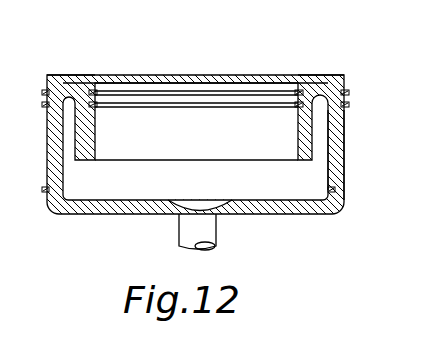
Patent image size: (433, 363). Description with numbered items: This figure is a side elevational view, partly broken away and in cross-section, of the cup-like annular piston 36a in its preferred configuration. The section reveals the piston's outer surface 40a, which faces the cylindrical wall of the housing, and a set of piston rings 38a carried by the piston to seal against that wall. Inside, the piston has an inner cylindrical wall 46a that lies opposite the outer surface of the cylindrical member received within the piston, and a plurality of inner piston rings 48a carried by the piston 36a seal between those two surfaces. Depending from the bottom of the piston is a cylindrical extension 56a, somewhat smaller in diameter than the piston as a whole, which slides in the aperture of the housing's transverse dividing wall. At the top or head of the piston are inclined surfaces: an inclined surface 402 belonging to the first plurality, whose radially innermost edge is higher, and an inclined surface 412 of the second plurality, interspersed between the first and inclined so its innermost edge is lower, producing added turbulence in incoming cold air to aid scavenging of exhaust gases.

The annular piston 36a is at (345, 142).
The piston rings 38a is at (347, 97).
The outer surface 40a is at (343, 140).
The inner cylindrical wall 46a is at (297, 140).
The inner piston rings 48a is at (130, 92).
The cylindrical extension 56a is at (216, 230).
The inclined surface 402 is at (323, 82).
The inclined surface 412 is at (77, 80).